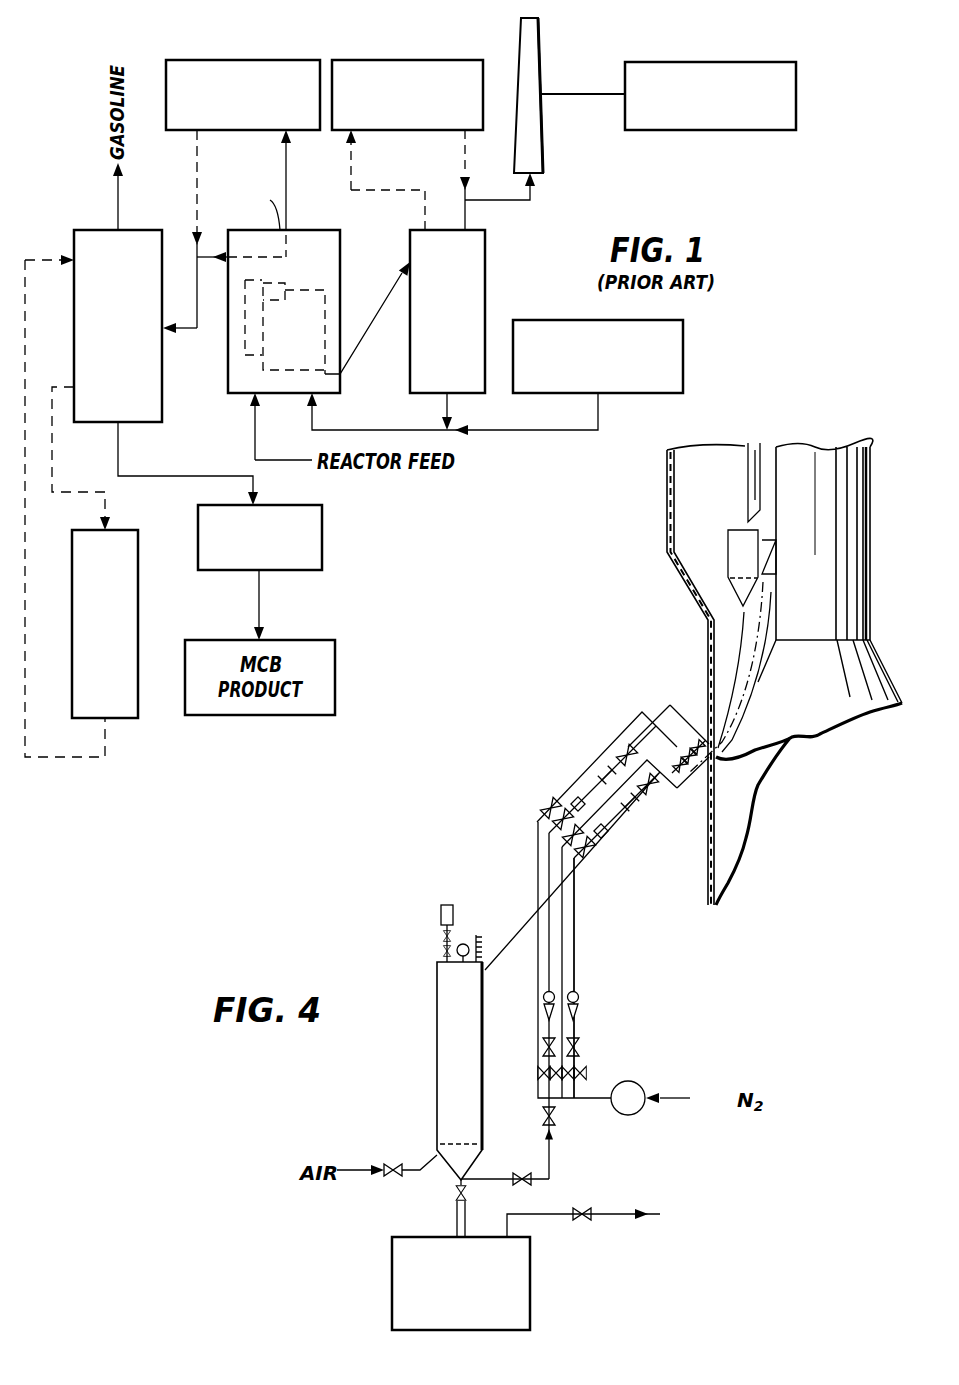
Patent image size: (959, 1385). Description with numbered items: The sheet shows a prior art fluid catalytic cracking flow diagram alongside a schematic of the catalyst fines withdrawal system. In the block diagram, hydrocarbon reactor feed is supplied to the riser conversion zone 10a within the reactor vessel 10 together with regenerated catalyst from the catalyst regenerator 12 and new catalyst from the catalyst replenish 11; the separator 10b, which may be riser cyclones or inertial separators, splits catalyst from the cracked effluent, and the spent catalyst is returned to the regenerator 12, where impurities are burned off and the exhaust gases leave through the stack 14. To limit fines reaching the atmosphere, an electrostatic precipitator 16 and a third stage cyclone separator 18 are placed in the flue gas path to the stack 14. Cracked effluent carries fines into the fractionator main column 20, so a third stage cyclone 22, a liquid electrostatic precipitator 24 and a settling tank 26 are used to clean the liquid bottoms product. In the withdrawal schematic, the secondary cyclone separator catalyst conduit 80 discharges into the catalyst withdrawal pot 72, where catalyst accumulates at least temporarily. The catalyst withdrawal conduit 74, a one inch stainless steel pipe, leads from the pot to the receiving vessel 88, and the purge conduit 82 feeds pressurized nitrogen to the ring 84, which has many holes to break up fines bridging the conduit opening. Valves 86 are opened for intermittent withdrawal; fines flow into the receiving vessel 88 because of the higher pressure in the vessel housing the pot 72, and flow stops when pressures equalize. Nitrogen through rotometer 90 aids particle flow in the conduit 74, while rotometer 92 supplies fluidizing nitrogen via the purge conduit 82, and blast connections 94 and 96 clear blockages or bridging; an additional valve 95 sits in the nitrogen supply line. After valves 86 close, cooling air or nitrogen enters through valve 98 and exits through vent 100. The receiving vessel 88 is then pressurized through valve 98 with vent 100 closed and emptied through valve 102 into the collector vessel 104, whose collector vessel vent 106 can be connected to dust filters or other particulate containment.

In FIG. 1, the reactor vessel 10 is at (308, 230).
In FIG. 1, the riser conversion zone 10a is at (245, 336).
In FIG. 1, the separator 10b is at (266, 283).
In FIG. 1, the catalyst replenish 11 is at (552, 320).
In FIG. 1, the catalyst regenerator 12 is at (412, 240).
In FIG. 1, the stack 14 is at (540, 46).
In FIG. 1, the electrostatic precipitator 16 is at (770, 62).
In FIG. 1, the third stage cyclone separator 18 is at (445, 60).
In FIG. 1, the fractionator main column 20 is at (137, 230).
In FIG. 1, the third stage cyclone 22 is at (276, 60).
In FIG. 1, the liquid electrostatic precipitator 24 is at (150, 508).
In FIG. 1, the settling tank 26 is at (322, 522).
In FIG. 4, the catalyst withdrawal pot 72 is at (728, 550).
In FIG. 4, the catalyst withdrawal conduit 74 is at (735, 682).
In FIG. 4, the secondary cyclone separator catalyst conduit 80 is at (750, 470).
In FIG. 4, the purge conduit 82 is at (755, 660).
In FIG. 4, the ring 84 is at (735, 578).
In FIG. 4, the valves 86 is at (693, 770).
In FIG. 4, the receiving vessel 88 is at (437, 1040).
In FIG. 4, the rotometer 90 is at (541, 1001).
In FIG. 4, the rotometer 92 is at (580, 998).
In FIG. 4, the blast connection 94 is at (540, 1048).
In FIG. 4, the valve 95 is at (551, 1140).
In FIG. 4, the blast connection 96 is at (566, 952).
In FIG. 4, the valve 98 is at (400, 1162).
In FIG. 4, the vent 100 is at (441, 909).
In FIG. 4, the valve 102 is at (455, 1190).
In FIG. 4, the collector vessel 104 is at (545, 1263).
In FIG. 4, the collector vessel vent 106 is at (645, 1190).